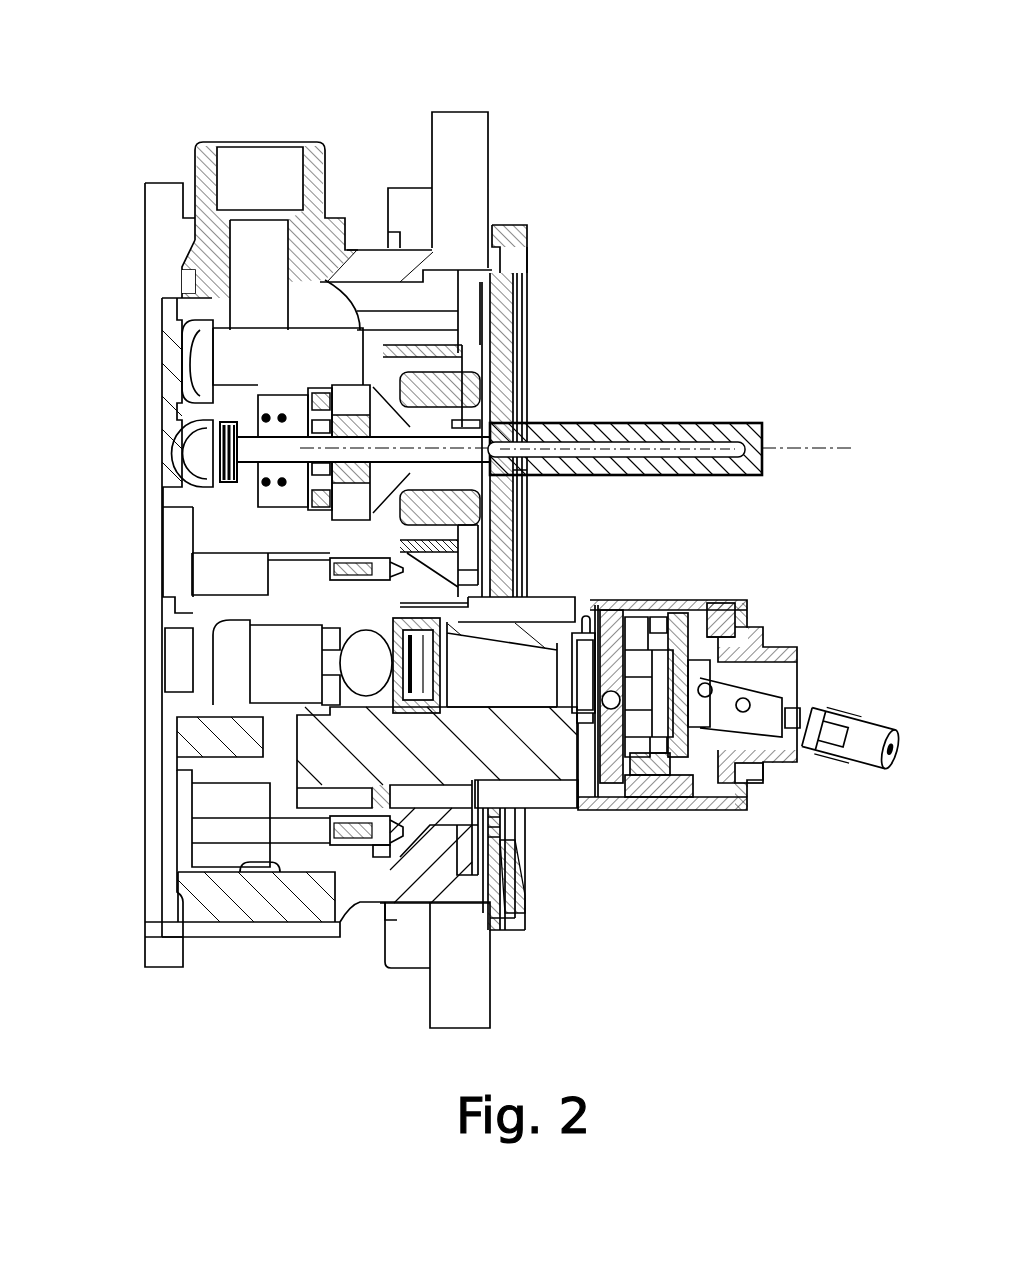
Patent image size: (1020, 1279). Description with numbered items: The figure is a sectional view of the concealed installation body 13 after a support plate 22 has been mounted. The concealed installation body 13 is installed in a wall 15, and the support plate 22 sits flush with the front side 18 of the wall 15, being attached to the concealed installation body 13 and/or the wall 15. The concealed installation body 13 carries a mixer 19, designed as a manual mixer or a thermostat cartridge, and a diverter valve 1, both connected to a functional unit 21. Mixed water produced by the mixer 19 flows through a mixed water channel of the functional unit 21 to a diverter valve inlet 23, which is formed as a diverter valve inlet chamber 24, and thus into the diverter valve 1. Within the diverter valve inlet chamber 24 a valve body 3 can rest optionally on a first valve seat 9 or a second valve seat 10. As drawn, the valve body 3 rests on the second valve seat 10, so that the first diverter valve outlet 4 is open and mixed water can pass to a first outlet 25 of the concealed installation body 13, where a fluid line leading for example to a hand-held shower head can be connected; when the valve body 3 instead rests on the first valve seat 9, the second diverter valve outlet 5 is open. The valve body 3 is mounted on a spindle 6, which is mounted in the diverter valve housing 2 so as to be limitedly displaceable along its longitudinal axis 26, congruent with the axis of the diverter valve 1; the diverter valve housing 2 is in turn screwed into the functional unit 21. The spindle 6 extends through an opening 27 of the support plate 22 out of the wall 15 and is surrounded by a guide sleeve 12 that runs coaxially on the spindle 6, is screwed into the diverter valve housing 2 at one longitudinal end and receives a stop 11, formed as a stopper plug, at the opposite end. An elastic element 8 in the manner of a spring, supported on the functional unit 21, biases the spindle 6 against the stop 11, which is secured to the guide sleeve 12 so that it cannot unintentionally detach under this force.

The diverter valve 1 is at (243, 363).
The diverter valve housing 2 is at (530, 378).
The valve body 3 is at (264, 484).
The first diverter valve outlet 4 is at (322, 385).
The second diverter valve outlet 5 is at (224, 436).
The spindle 6 is at (655, 425).
The elastic element 8 is at (238, 440).
The first valve seat 9 is at (278, 509).
The second valve seat 10 is at (256, 404).
The stop 11 is at (750, 425).
The guide sleeve 12 is at (527, 417).
The concealed installation body 13 is at (205, 98).
The wall 15 is at (455, 125).
The front side 18 is at (490, 148).
The mixer 19 is at (612, 838).
The functional unit 21 is at (285, 900).
The support plate 22 is at (527, 255).
The diverter valve inlet 23 is at (242, 491).
The diverter valve inlet chamber 24 is at (249, 384).
The first outlet 25 is at (245, 140).
The longitudinal axis 26 is at (855, 440).
The opening 27 is at (530, 495).